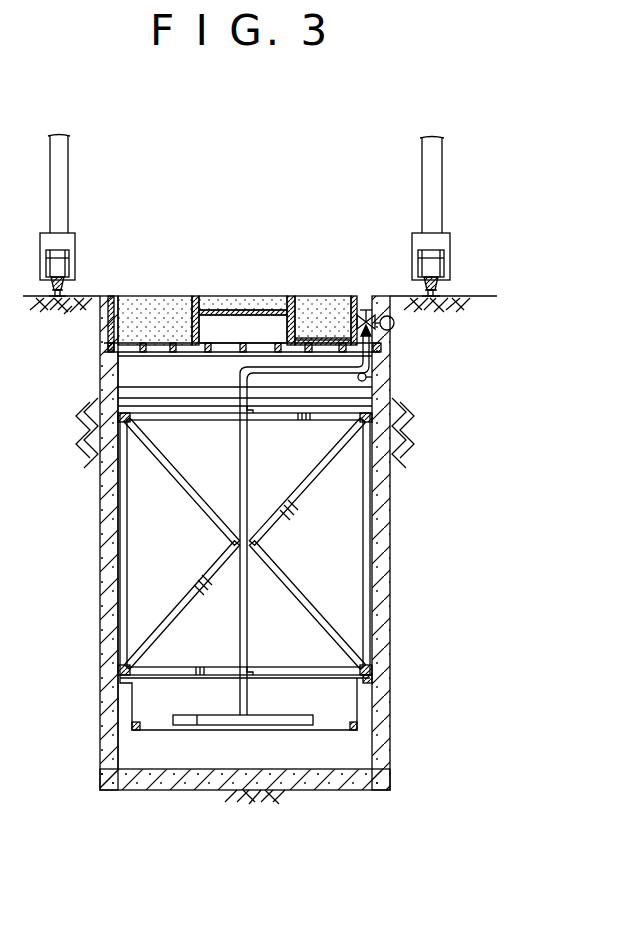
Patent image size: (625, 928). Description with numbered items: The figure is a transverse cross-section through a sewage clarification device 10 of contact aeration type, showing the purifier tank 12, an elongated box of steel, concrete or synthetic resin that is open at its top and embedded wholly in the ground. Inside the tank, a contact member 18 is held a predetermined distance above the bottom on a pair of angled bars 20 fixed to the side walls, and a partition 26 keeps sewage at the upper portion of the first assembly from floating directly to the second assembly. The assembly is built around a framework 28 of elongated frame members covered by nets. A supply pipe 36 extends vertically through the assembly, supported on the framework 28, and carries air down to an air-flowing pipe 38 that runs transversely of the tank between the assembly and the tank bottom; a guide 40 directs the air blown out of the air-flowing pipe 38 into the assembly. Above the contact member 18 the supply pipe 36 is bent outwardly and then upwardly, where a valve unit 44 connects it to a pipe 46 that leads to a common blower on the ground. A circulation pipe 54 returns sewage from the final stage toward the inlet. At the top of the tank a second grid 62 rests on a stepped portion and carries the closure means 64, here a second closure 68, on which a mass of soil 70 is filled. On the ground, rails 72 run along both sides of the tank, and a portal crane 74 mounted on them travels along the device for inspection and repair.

The clarification device 10 is at (461, 131).
The purifier tank 12 is at (100, 583).
The contact member 18 is at (118, 642).
The angled bar 20 is at (378, 680).
The partition 26 is at (372, 400).
The framework 28 is at (120, 543).
The supply pipe 36 is at (240, 503).
The air-flowing pipe 38 is at (196, 722).
The guide 40 is at (144, 725).
The valve unit 44 is at (359, 312).
The pipe 46 is at (394, 328).
The circulation pipe 54 is at (368, 378).
The second grid 62 is at (153, 340).
The closure means 64 is at (291, 296).
The second closure 68 is at (195, 330).
The soil 70 is at (262, 300).
The rail 72 is at (60, 291).
The portal crane 74 is at (444, 195).